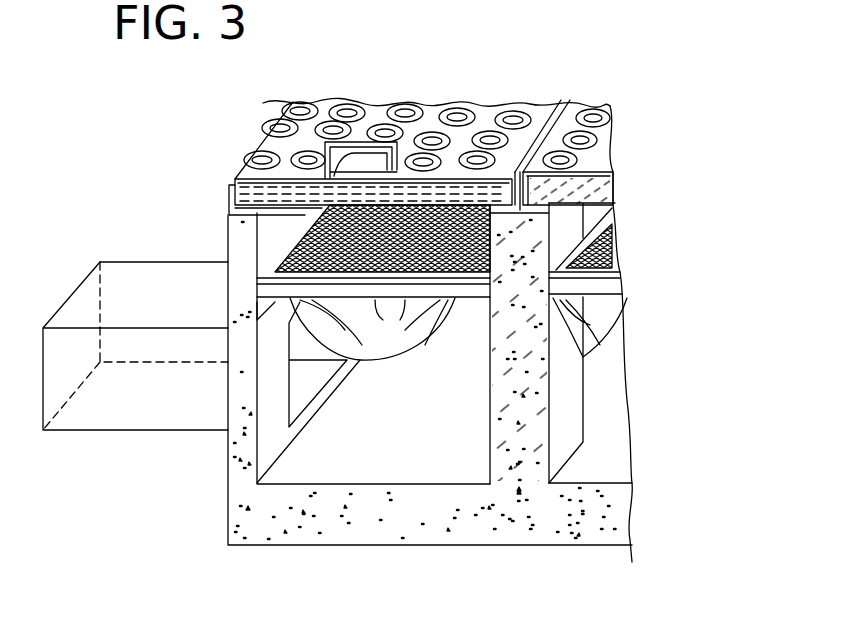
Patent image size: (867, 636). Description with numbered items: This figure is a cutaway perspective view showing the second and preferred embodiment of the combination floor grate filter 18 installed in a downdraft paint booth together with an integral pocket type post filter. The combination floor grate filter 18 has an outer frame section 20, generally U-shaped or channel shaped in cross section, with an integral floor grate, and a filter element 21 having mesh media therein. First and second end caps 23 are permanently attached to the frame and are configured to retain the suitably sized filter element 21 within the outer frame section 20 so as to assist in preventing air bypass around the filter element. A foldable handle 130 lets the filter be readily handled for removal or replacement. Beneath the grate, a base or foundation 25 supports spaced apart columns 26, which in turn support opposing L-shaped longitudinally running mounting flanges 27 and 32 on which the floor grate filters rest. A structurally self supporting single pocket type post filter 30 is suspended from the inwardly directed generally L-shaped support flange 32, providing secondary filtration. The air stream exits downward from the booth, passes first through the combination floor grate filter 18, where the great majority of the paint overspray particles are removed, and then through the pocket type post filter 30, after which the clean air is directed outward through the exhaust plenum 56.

The combination floor grate filter (second embodiment) 18 is at (250, 113).
The outer frame section 20 is at (240, 158).
The filter element 21 is at (246, 196).
The mounting flange 27 is at (230, 217).
The foldable handle 130 is at (363, 107).
The end cap 23 is at (603, 186).
The support flange 32 is at (556, 301).
The pocket type post filter 30 is at (463, 286).
The column 26 is at (490, 435).
The base or foundation 25 is at (392, 530).
The exhaust plenum 56 is at (175, 420).